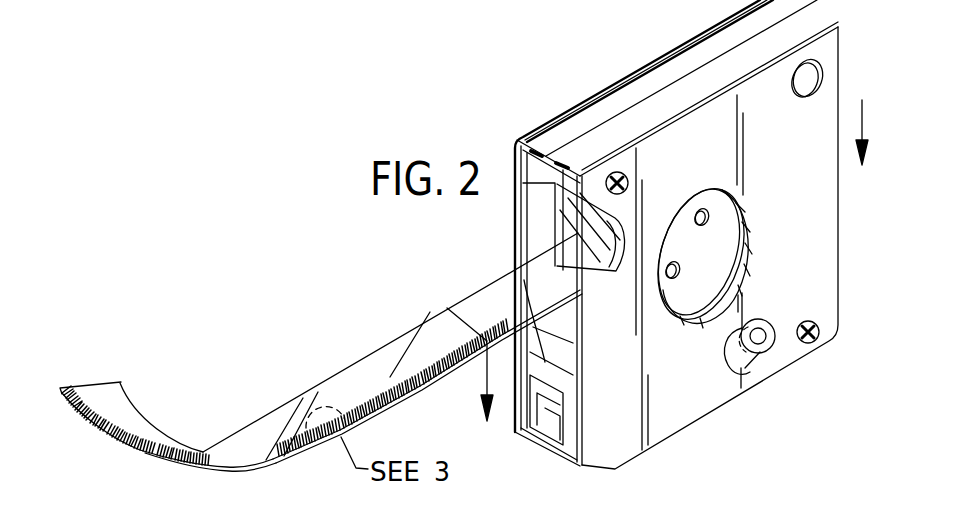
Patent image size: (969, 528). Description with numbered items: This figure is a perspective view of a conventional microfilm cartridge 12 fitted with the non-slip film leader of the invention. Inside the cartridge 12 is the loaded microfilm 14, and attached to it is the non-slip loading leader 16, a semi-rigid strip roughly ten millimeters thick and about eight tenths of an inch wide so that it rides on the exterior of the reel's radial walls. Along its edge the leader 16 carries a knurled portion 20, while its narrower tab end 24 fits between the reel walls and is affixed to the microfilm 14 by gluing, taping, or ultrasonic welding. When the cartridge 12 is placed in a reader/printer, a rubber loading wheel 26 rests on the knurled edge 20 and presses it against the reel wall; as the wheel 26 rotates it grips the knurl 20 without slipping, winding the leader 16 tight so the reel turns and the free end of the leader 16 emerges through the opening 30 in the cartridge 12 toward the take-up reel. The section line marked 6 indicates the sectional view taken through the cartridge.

The microfilm cartridge 12 is at (571, 108).
The microfilm 14 is at (487, 283).
The non-slip loading leader 16 is at (247, 437).
The knurled portion 20 is at (373, 393).
The tab end 24 is at (427, 340).
The loading wheel 26 is at (765, 319).
The cartridge opening 30 is at (575, 306).
The section line 6- 6 is at (843, 133).